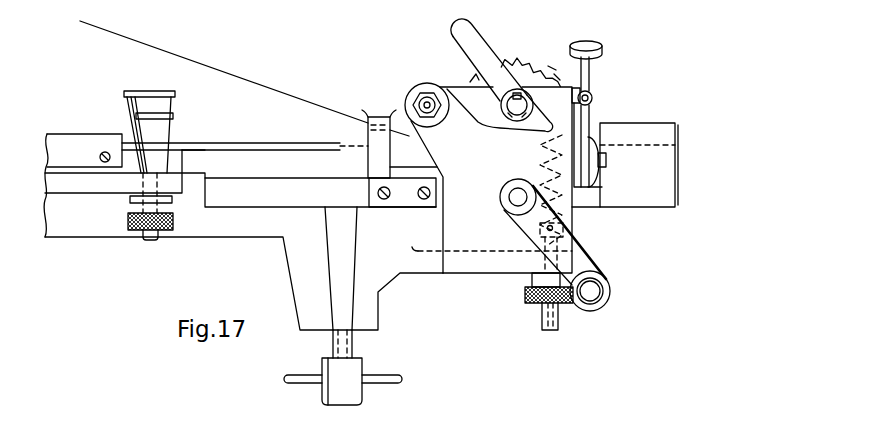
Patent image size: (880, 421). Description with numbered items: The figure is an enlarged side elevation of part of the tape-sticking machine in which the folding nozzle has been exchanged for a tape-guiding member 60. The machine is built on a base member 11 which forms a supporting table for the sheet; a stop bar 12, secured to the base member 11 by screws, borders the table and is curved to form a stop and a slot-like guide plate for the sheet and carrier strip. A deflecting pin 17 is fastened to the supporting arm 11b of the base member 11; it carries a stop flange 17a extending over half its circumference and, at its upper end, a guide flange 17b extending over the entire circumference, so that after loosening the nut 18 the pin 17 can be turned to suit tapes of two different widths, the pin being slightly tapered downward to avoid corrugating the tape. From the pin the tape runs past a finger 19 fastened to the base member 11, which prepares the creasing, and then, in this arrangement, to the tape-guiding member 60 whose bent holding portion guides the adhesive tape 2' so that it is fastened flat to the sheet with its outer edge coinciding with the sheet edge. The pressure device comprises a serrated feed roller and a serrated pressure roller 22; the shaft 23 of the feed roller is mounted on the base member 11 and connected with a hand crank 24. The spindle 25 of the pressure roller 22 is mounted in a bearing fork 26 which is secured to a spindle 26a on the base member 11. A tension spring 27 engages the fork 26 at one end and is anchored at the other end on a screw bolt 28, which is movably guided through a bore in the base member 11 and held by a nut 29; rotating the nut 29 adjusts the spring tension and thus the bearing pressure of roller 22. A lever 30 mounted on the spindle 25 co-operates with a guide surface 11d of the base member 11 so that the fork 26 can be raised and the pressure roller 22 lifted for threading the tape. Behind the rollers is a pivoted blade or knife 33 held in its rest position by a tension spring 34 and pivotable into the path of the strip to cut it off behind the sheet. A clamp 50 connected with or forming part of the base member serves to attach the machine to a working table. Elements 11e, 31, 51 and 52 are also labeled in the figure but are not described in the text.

The adhesive tape 2' is at (244, 78).
The base member 11 is at (232, 217).
The supporting arm 11b is at (112, 187).
The guide surface 11d is at (487, 122).
The base portion 11e is at (108, 420).
The stop bar 12 is at (82, 143).
The deflecting pin 17 is at (158, 91).
The stop flange 17a is at (173, 115).
The guide flange 17b is at (126, 94).
The nut 18 is at (167, 230).
The finger 19 is at (282, 143).
The pressure roller 22 is at (515, 58).
The shaft 23 is at (516, 199).
The hand crank 24 is at (608, 286).
The spindle 25 is at (517, 112).
The bearing fork 26 is at (460, 97).
The spindle 26a is at (426, 106).
The tension spring 27 is at (575, 210).
The screw bolt 28 is at (558, 320).
The nut 29 is at (525, 297).
The lever 30 is at (467, 34).
The pawl 31 is at (549, 62).
The pivoted blade or knife 33 is at (589, 77).
The tension spring 34 is at (592, 98).
The clamp 50 is at (352, 347).
The element 51 is at (529, 420).
The element 52 is at (614, 420).
The tape-guiding member 60 is at (370, 115).